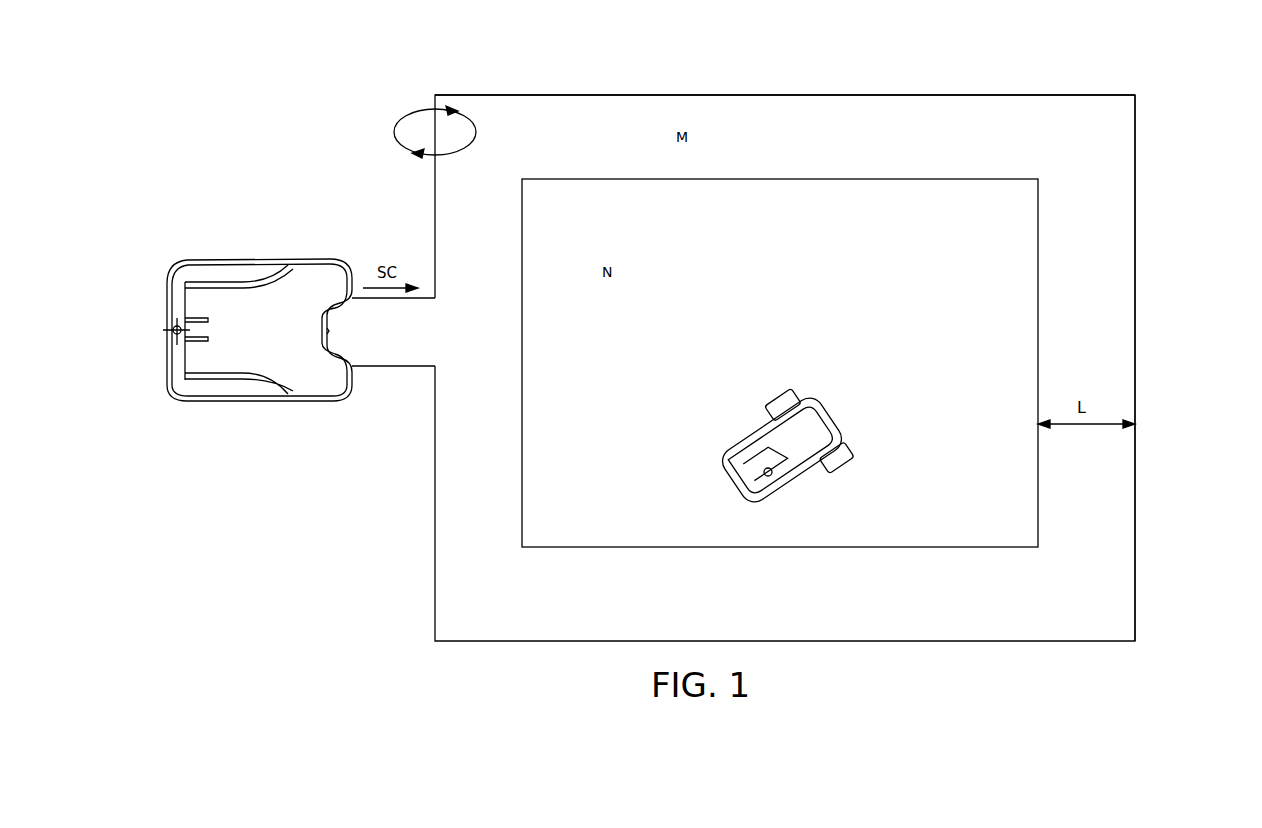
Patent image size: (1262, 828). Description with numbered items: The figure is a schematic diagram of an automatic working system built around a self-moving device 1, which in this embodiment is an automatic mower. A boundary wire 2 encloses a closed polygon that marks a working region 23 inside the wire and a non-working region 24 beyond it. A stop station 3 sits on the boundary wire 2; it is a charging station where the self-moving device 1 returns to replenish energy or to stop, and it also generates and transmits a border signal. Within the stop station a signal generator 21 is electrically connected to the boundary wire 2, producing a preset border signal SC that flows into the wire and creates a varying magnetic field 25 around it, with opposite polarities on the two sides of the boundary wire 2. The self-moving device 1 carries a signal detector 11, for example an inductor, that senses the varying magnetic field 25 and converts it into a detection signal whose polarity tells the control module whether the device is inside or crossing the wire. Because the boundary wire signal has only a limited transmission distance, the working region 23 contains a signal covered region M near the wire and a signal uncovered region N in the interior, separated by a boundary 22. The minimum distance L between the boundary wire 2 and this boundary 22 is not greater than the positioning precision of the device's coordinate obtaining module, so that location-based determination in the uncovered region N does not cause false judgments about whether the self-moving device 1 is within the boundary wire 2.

The self-moving device 1 is at (839, 397).
The signal detector 11 is at (767, 468).
The boundary wire 2 is at (1135, 308).
The signal generator 21 is at (177, 347).
The boundary 22 is at (1038, 283).
The working region 23 is at (1078, 131).
The non-working region 24 is at (1163, 502).
The varying magnetic field 25 is at (415, 112).
The stop station 3 is at (302, 238).